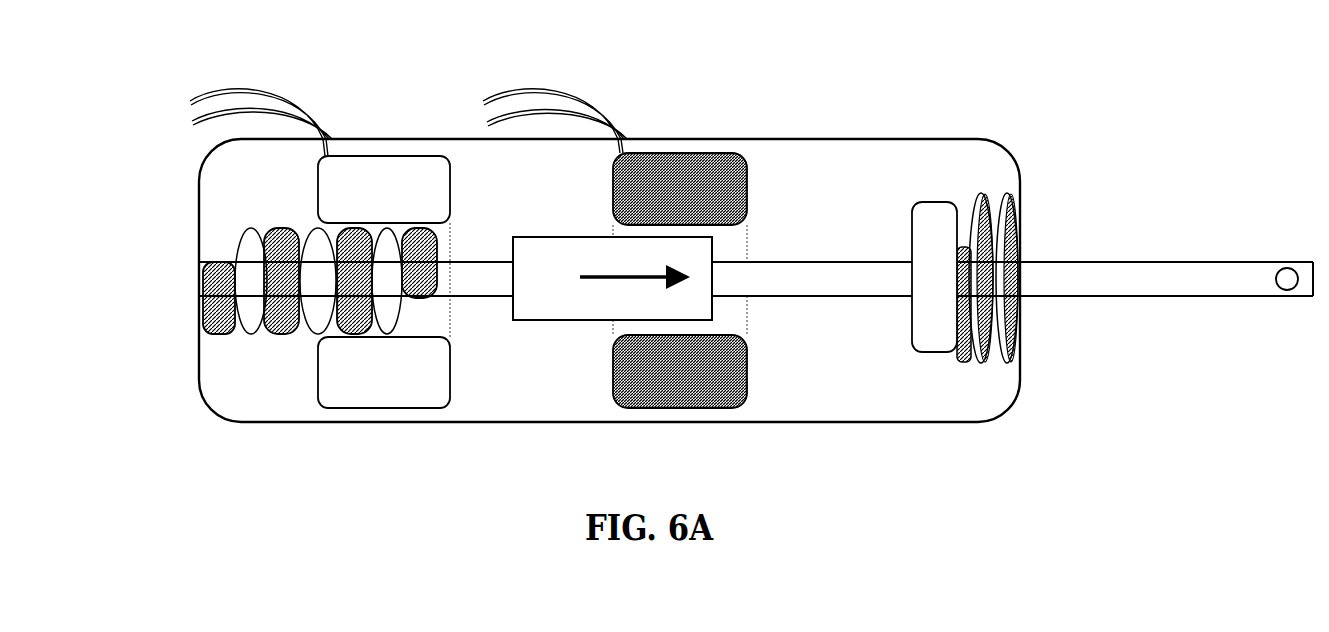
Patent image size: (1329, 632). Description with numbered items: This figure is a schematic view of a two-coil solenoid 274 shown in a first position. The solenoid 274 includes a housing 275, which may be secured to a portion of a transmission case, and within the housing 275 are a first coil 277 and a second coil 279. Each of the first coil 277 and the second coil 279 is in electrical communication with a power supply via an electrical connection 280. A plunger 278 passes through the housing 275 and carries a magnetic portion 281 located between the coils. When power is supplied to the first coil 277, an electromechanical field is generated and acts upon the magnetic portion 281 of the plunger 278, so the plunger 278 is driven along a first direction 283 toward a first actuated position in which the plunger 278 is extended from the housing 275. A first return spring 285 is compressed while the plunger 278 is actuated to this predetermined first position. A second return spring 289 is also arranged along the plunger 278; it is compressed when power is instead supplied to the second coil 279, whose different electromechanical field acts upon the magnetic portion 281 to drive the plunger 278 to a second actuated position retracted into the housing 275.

The two-coil solenoid 274 is at (160, 288).
The housing 275 is at (877, 139).
The first coil 277 is at (653, 153).
The plunger 278 is at (1135, 260).
The second coil 279 is at (350, 155).
The electrical connection 280 is at (258, 83).
The magnetic portion 281 is at (595, 322).
The first direction 283 is at (607, 275).
The first return spring 285 is at (1002, 195).
The second return spring 289 is at (257, 227).